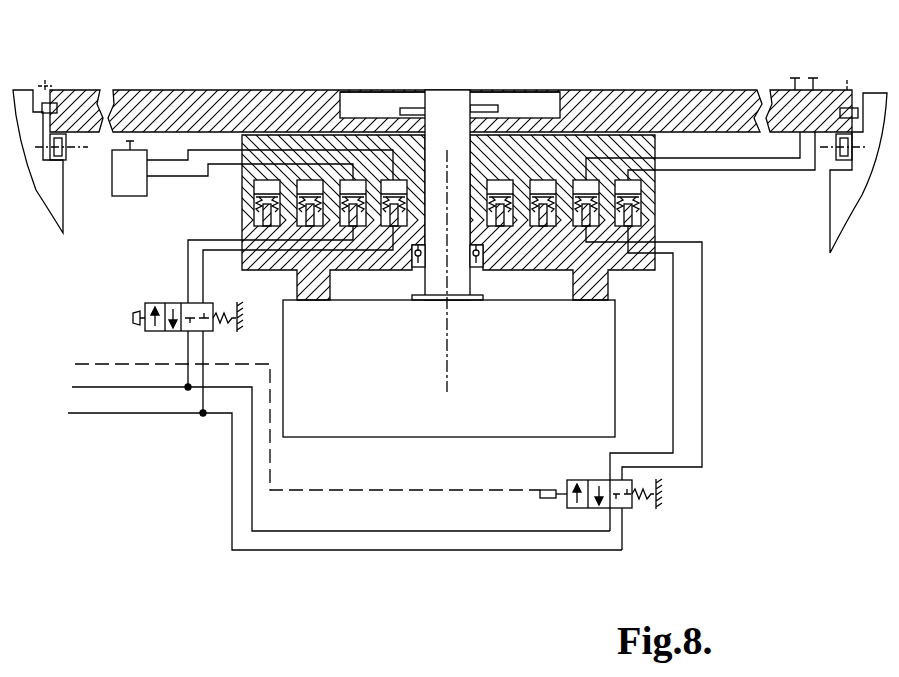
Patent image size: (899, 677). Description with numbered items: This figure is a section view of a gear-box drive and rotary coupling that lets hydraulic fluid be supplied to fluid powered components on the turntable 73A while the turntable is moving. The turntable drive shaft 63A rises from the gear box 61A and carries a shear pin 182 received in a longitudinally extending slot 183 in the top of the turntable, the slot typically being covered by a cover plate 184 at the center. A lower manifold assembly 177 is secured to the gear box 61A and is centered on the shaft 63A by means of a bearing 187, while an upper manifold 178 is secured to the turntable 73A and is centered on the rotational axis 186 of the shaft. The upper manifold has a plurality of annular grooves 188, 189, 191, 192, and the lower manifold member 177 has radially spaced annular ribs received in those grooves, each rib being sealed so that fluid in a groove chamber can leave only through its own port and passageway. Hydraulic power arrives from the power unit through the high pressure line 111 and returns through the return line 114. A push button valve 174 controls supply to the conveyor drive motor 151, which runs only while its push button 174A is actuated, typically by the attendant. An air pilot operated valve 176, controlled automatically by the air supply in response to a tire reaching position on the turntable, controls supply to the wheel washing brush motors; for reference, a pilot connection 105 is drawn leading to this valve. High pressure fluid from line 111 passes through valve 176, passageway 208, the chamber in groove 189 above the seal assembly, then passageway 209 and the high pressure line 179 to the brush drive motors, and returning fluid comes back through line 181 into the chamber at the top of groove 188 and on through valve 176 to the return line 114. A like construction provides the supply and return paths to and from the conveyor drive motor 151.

The turntable 73A is at (655, 128).
The turntable drive shaft 63A is at (447, 100).
The gear box 61A is at (422, 409).
The pilot line 105 is at (105, 364).
The high pressure line 111 is at (78, 387).
The return line 114 is at (105, 413).
The conveyor drive motor 151 is at (135, 197).
The push button valve 174 is at (166, 298).
The push button 174A is at (132, 318).
The air pilot operated valve 176 is at (590, 478).
The lower manifold assembly 177 is at (657, 240).
The upper manifold 178 is at (657, 195).
The high pressure line 179 is at (722, 158).
The return line 181 is at (750, 172).
The shear pin 182 is at (415, 108).
The slot 183 is at (395, 92).
The cover plate 184 is at (362, 92).
The rotational axis 186 is at (445, 330).
The bearing 187 is at (478, 252).
The annular groove 188 is at (262, 187).
The annular groove 189 is at (308, 180).
The annular groove 191 is at (502, 180).
The annular groove 192 is at (546, 180).
The passageway 208 is at (640, 272).
The passageway 209 is at (622, 135).